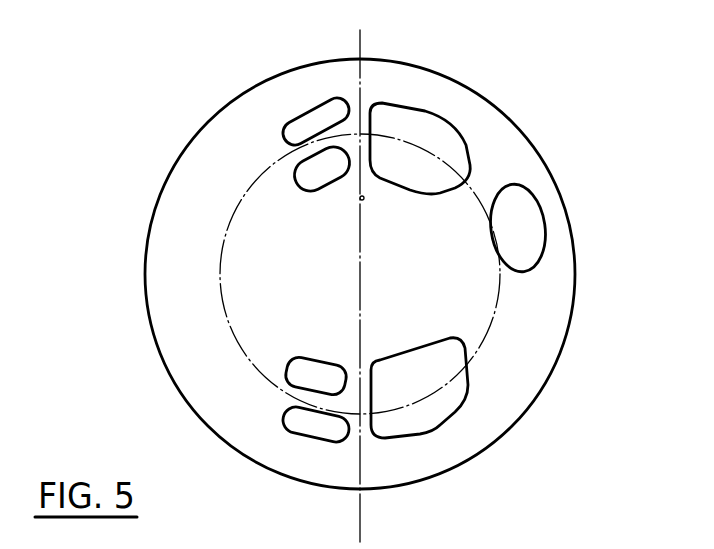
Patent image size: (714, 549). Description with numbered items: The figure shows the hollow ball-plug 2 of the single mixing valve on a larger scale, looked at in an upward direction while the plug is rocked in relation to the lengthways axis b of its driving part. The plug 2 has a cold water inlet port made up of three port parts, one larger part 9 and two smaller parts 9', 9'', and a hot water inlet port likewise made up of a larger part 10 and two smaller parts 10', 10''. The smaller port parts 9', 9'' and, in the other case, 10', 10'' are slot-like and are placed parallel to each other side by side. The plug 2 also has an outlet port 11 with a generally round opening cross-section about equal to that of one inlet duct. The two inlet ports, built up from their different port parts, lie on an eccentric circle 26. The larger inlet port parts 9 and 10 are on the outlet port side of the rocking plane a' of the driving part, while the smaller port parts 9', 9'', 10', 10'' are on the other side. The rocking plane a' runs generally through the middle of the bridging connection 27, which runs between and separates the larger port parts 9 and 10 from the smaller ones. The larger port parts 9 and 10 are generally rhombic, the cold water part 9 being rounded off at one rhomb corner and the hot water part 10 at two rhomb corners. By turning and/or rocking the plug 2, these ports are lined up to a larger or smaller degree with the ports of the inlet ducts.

The plug 2 is at (446, 277).
The circle 26 is at (500, 281).
The cold water inlet port part 9 is at (431, 425).
The cold water inlet port part 9' is at (295, 463).
The cold water inlet port part 9'' is at (233, 381).
The hot water inlet port part 10 is at (447, 120).
The hot water inlet port part 10' is at (289, 94).
The hot water inlet port part 10'' is at (251, 147).
The outlet port 11 is at (540, 231).
The bridging connection 27 is at (365, 125).
The rocking plane a' is at (376, 280).
The lengthways axis b is at (364, 199).